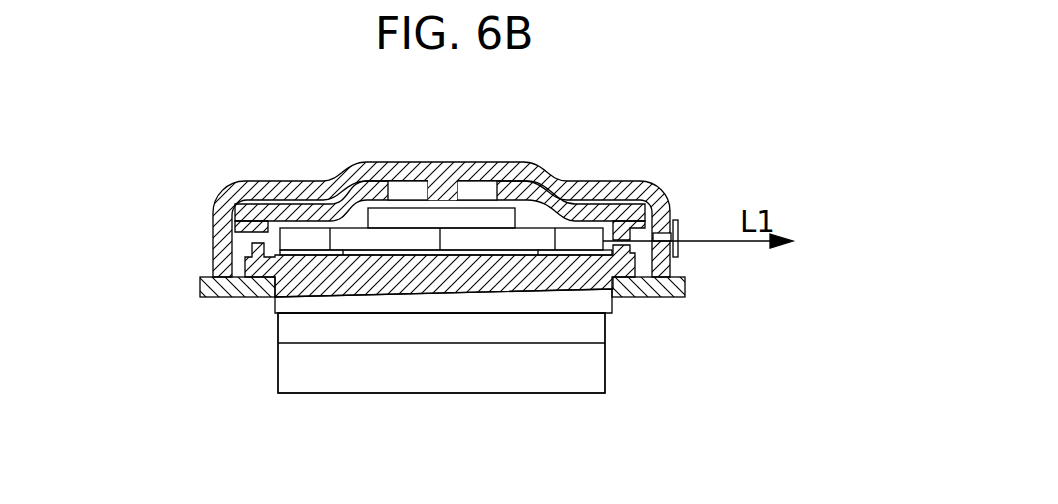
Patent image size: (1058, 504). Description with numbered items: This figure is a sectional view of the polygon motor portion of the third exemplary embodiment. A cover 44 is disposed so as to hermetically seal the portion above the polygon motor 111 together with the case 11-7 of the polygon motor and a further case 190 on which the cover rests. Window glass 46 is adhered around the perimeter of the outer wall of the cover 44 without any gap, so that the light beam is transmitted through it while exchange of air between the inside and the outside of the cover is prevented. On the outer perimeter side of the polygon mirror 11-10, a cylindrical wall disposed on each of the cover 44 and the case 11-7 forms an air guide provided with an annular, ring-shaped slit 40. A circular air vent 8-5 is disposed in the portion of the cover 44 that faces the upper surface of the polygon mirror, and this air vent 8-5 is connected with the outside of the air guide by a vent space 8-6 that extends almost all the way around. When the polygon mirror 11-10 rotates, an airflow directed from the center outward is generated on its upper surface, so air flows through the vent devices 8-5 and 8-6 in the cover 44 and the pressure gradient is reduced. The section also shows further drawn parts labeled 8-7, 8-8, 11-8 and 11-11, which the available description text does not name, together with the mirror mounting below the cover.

The air vent 8-5 is at (407, 190).
The vent space 8-6 is at (260, 198).
The inner cover member 8-7 is at (353, 187).
The engaging portion of inner cover 8-8 is at (233, 230).
The case 11-7 is at (437, 297).
The image sensor chip 11-8 is at (482, 218).
The polygon mirror 11-10 is at (500, 232).
The holding base member 11-11 is at (273, 297).
The polygon motor 111 is at (250, 357).
The annular slit 40 is at (463, 180).
The cover 44 is at (618, 183).
The window glass 46 is at (677, 227).
The case 190 is at (653, 300).